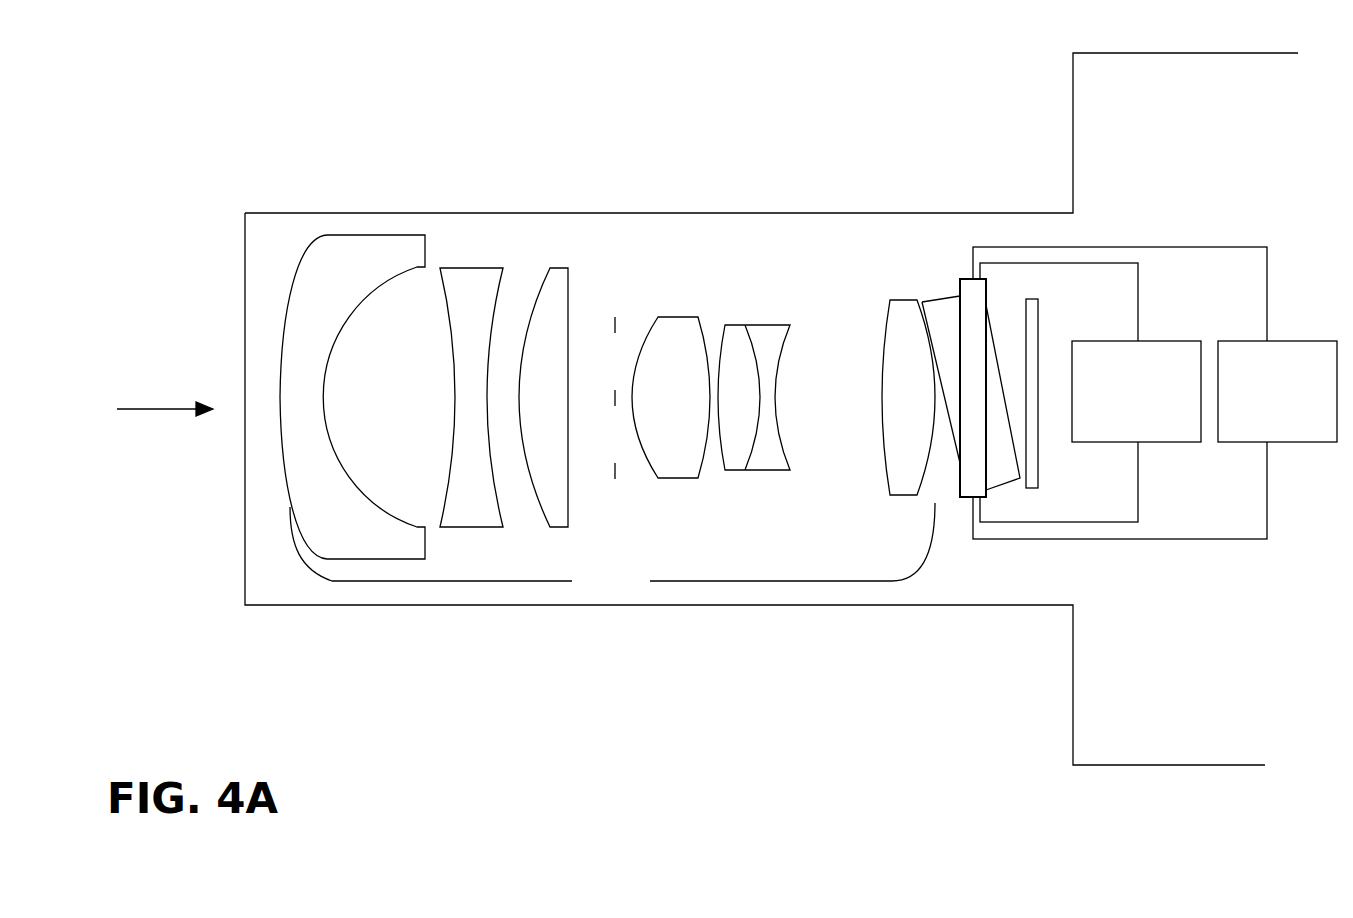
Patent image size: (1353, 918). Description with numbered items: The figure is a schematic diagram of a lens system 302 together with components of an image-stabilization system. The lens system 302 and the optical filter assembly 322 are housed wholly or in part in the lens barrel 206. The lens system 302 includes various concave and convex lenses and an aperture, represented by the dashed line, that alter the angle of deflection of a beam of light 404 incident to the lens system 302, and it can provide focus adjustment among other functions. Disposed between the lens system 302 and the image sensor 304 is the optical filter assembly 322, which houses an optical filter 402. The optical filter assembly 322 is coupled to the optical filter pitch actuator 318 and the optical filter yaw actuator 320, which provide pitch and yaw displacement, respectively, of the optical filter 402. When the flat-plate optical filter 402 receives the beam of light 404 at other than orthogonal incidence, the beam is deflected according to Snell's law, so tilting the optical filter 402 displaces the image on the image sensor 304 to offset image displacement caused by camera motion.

The lens barrel 206 is at (563, 213).
The lens system 302 is at (650, 581).
The optical filter assembly 322 is at (962, 261).
The optical filter 402 is at (958, 280).
The image sensor 304 is at (1040, 345).
The optical filter pitch actuator 318 is at (1136, 391).
The optical filter yaw actuator 320 is at (1277, 391).
The beam of light 404 is at (149, 409).